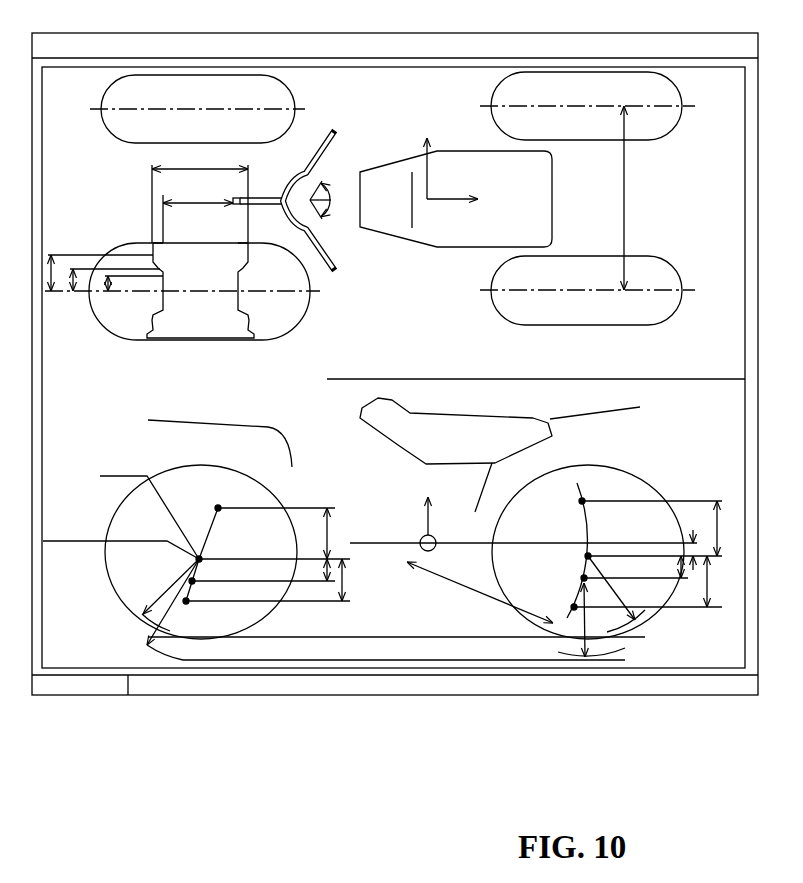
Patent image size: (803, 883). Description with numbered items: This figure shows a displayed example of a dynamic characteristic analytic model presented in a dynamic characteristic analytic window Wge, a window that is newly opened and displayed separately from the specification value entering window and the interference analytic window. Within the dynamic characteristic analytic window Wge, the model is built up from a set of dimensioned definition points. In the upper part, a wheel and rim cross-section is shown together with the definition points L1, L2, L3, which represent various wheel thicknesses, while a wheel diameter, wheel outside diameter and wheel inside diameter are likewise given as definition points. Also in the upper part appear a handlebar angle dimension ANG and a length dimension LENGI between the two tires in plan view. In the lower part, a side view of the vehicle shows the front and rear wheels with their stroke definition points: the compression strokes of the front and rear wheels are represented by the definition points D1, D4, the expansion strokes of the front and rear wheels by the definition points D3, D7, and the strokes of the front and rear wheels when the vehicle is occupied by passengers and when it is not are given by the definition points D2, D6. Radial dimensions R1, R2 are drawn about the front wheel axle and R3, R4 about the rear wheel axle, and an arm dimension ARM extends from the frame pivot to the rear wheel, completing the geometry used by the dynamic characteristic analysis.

The dynamic characteristic analytic window Wge is at (395, 381).
The wheelbase length dimension LENGI is at (648, 198).
The definition point L1 is at (99, 284).
The definition point L2 is at (114, 291).
The definition point L3 is at (132, 295).
The handlebar angle dimension ANG is at (333, 190).
The definition point D1 is at (275, 533).
The definition point D2 is at (263, 570).
The definition point D3 is at (275, 580).
The definition point D4 is at (662, 535).
The definition point D6 is at (636, 567).
The definition point D7 is at (653, 581).
The front wheel radius R1 is at (170, 595).
The front wheel radius R2 is at (173, 602).
The rear wheel radius R3 is at (616, 594).
The rear wheel radius R4 is at (591, 620).
The swing arm length dimension ARM is at (480, 592).